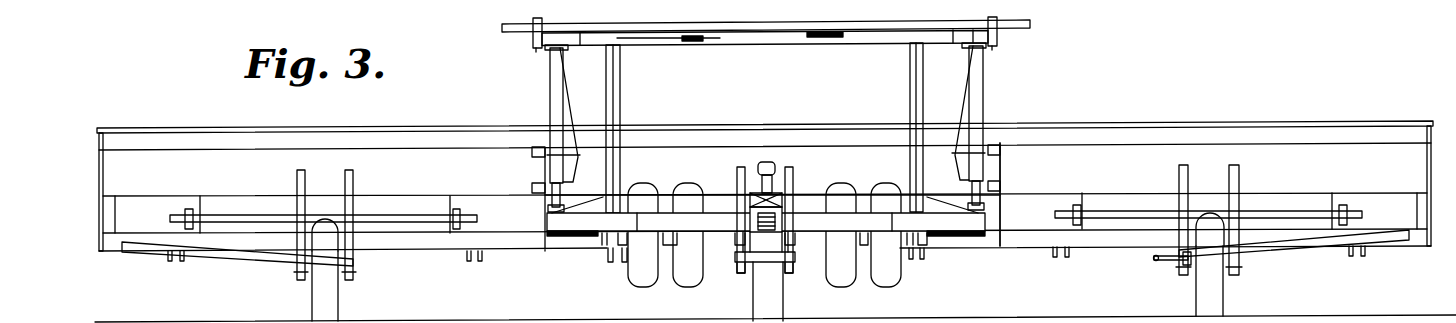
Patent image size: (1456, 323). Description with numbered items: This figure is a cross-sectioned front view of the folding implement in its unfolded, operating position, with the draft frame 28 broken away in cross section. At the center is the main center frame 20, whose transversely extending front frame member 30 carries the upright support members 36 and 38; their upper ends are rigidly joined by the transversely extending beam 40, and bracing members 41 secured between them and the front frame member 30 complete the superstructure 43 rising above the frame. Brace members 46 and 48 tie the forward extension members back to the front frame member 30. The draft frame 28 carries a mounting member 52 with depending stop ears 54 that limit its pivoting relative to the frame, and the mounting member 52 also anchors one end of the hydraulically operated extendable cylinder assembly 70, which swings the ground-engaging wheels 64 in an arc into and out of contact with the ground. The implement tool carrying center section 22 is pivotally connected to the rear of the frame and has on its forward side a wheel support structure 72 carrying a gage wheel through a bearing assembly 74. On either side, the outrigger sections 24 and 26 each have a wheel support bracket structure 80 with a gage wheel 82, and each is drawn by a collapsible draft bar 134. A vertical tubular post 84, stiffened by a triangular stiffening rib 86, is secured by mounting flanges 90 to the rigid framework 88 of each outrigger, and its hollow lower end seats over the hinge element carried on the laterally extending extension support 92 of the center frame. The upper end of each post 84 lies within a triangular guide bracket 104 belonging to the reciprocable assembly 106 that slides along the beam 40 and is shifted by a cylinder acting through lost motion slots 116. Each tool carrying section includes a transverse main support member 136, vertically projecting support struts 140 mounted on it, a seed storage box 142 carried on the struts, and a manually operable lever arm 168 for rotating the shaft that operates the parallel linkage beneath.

The main center frame 20 is at (647, 212).
The implement tool carrying center section 22 is at (796, 118).
The outrigger section 24 is at (1240, 108).
The outrigger section 26 is at (323, 122).
The draft frame 28 is at (745, 252).
The front frame member 30 is at (913, 243).
The upright support member 36 is at (923, 75).
The upright support member 38 is at (608, 80).
The transversely extending beam 40 is at (1030, 20).
The bracing member 41 is at (620, 116).
The superstructure 43 is at (637, 75).
The brace member 46 is at (652, 228).
The brace member 48 is at (877, 230).
The mounting member 52 is at (765, 190).
The stop ear 54 is at (755, 195).
The ground-engaging wheel 64 is at (690, 288).
The extendable cylinder assembly 70 is at (768, 172).
The wheel support structure 72 is at (772, 262).
The bearing assembly 74 is at (750, 275).
The wheel support bracket structure 80 is at (352, 257).
The gage wheel 82 is at (315, 306).
The tubular post 84 is at (549, 112).
The stiffening rib 86 is at (562, 123).
The rigid framework 88 is at (538, 168).
The mounting flange 90 is at (573, 166).
The extension support 92 is at (580, 228).
The guide bracket 104 is at (533, 40).
The reciprocable assembly 106 is at (701, 58).
The lost motion slot 116 is at (805, 43).
The collapsible draft bar 134 is at (1164, 258).
The main support member 136 is at (430, 248).
The support strut 140 is at (114, 215).
The seed storage box 142 is at (148, 157).
The lever arm 168 is at (356, 191).